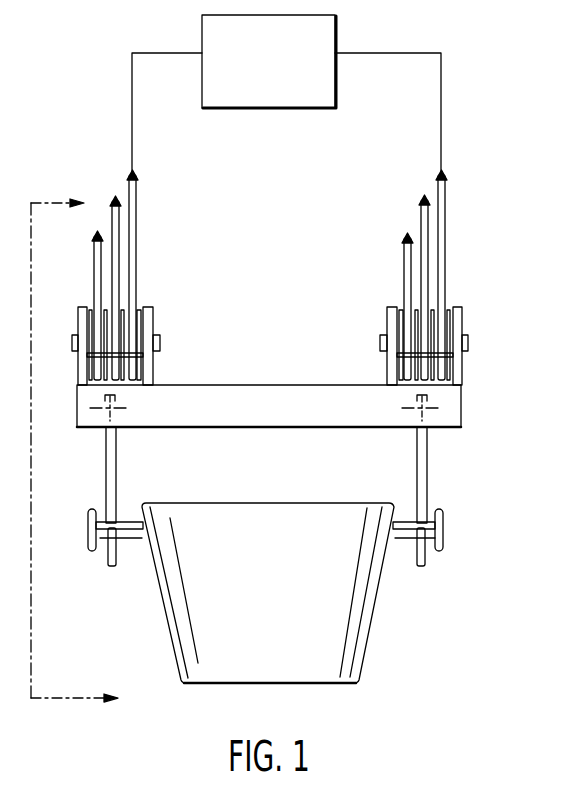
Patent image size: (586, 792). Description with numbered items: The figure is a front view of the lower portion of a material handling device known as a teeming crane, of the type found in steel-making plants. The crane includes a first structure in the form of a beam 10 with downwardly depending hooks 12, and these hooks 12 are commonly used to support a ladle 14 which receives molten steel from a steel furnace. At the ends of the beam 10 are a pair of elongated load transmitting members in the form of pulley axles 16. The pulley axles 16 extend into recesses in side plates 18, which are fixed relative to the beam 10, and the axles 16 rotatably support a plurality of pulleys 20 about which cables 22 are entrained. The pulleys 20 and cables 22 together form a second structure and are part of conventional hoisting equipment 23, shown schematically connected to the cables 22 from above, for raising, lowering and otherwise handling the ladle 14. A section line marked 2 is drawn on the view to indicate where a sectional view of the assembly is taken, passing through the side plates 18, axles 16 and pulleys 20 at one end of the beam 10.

The section line 2- 2 is at (85, 452).
The beam 10 is at (268, 396).
The hooks 12 is at (116, 472).
The ladle 14 is at (262, 511).
The pulley axles 16 is at (160, 346).
The side plates 18 is at (153, 316).
The pulleys 20 is at (140, 309).
The cables 22 is at (137, 207).
The hoisting equipment 23 is at (295, 80).